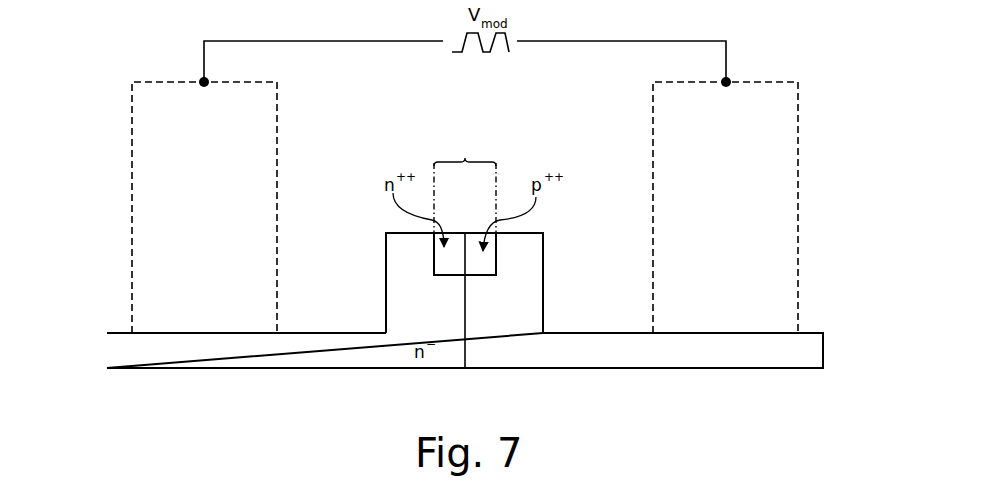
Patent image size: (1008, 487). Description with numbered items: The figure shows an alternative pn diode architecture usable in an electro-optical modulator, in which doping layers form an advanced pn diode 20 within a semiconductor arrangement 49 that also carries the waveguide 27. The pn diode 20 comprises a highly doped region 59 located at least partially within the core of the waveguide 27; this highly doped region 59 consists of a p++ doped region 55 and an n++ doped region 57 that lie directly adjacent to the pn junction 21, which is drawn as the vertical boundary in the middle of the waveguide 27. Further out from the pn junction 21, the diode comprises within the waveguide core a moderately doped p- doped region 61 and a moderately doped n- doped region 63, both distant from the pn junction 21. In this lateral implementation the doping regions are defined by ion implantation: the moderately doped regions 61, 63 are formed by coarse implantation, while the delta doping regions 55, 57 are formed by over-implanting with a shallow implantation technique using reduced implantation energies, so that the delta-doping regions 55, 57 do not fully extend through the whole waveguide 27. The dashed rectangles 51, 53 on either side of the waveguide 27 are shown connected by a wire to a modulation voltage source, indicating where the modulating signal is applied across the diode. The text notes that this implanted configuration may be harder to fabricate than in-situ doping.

The pn diode 20 is at (521, 154).
The pn junction 21 is at (466, 262).
The waveguide 27 is at (552, 300).
The semiconductor arrangement 49 is at (330, 327).
The first electrode 51 is at (148, 165).
The second electrode 53 is at (778, 165).
The p++ doped region 55 is at (480, 262).
The n++ doped region 57 is at (452, 262).
The highly doped region 59 is at (465, 185).
The p- doped region 61 is at (532, 255).
The n- doped region 63 is at (398, 255).